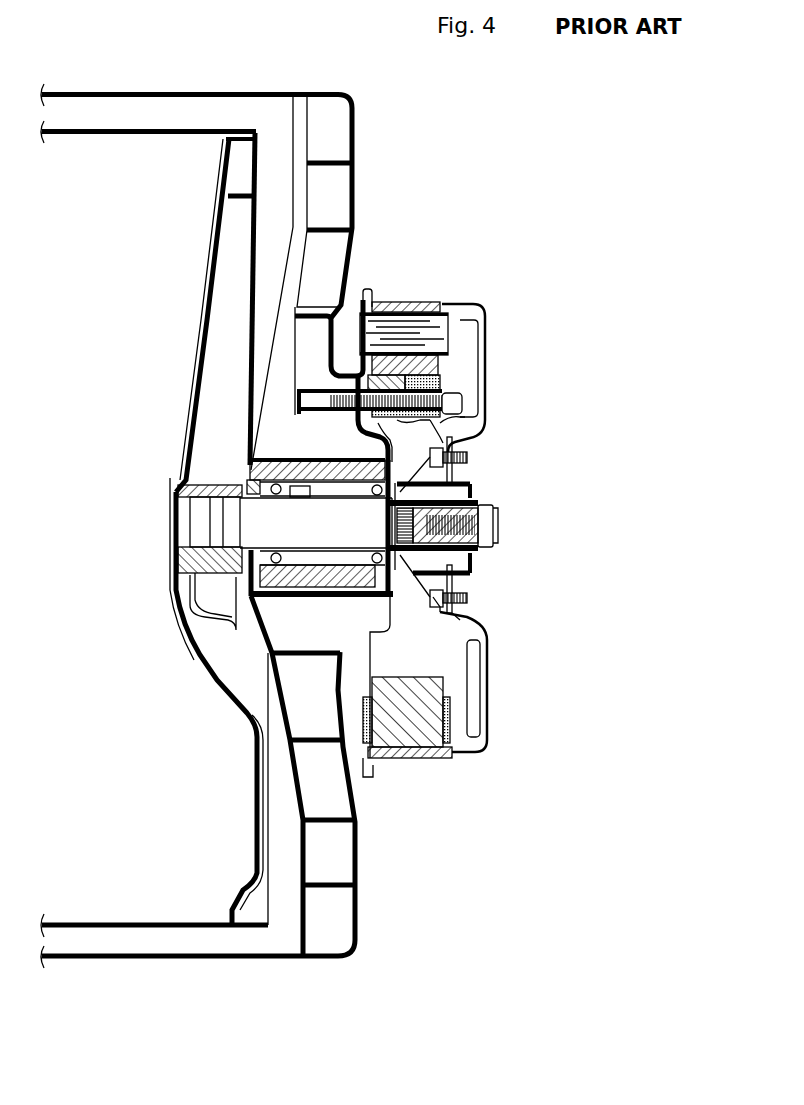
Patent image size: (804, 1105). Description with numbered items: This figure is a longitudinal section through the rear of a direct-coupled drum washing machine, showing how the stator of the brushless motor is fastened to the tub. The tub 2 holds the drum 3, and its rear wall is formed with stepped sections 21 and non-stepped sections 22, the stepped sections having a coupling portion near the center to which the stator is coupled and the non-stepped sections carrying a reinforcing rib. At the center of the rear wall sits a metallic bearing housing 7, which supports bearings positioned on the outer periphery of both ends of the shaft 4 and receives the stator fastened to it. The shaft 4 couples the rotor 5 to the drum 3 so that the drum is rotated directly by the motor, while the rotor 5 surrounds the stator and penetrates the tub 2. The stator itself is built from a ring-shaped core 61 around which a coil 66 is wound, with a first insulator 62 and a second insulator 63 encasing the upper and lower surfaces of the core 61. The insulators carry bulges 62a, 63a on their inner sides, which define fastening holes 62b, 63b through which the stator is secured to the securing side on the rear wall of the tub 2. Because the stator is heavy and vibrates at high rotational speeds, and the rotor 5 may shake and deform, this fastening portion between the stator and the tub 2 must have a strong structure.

The tub 2 is at (128, 92).
The drum 3 is at (128, 136).
The stepped section 21 is at (342, 190).
The non-stepped section 22 is at (343, 853).
The shaft 4 is at (197, 530).
The rotor 5 is at (487, 343).
The bearing housing 7 is at (341, 590).
The core 61 is at (412, 758).
The first insulator 62 is at (353, 380).
The bulge 62a is at (393, 425).
The fastening hole 62b is at (357, 423).
The second insulator 63 is at (442, 381).
The bulge 63a is at (440, 424).
The fastening hole 63b is at (455, 403).
The coil 66 is at (422, 333).